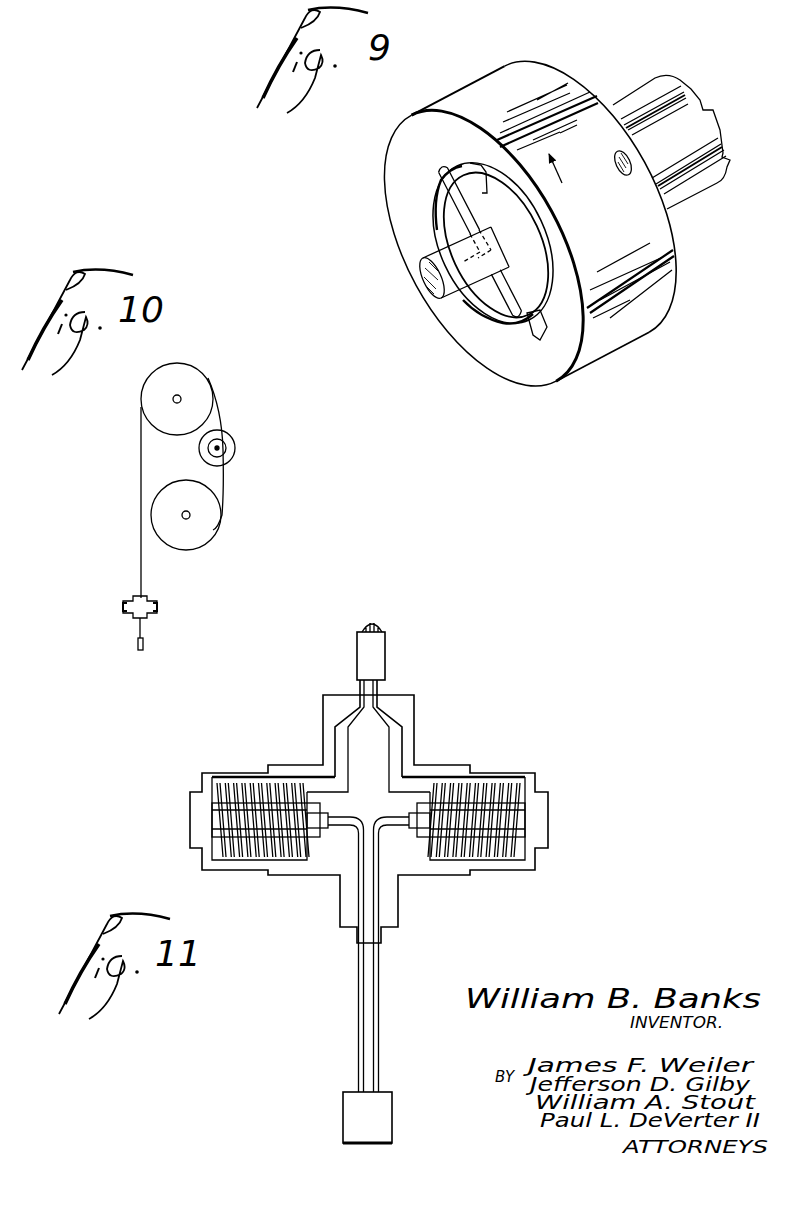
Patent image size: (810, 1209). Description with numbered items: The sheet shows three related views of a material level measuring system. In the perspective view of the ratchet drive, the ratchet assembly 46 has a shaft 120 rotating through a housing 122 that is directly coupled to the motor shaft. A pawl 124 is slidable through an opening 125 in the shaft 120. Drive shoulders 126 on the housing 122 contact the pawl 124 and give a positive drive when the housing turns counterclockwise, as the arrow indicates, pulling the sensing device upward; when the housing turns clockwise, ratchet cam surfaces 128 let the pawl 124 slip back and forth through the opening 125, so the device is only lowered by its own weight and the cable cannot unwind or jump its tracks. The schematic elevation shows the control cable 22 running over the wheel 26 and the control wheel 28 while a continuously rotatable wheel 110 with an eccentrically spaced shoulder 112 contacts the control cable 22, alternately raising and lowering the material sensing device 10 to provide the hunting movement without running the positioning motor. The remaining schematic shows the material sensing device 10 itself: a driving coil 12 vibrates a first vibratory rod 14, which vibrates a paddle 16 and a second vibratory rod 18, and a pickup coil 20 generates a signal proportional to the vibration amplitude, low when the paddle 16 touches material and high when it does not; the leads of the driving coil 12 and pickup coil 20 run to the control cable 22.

In FIG. 9, the ratchet assembly 46 is at (559, 201).
In FIG. 9, the housing 122 is at (657, 295).
In FIG. 9, the ratchet cam surfaces 128 is at (427, 205).
In FIG. 9, the pawl 124 is at (493, 313).
In FIG. 9, the opening 125 is at (484, 238).
In FIG. 9, the shaft 120 is at (420, 278).
In FIG. 9, the drive shoulders 126 is at (488, 183).
In FIG. 10, the wheel 26 is at (193, 383).
In FIG. 10, the control wheel 28 is at (212, 523).
In FIG. 10, the continuously rotatable wheel 110 is at (232, 442).
In FIG. 10, the eccentrically spaced shoulder 112 is at (208, 447).
In FIG. 10, the control cable 22 is at (219, 415).
In FIG. 11, the control cable 22 is at (385, 637).
In FIG. 10, the material sensing device 10 is at (150, 600).
In FIG. 11, the material sensing device 10 is at (435, 760).
In FIG. 11, the driving coil 12 is at (250, 773).
In FIG. 11, the pickup coil 20 is at (503, 790).
In FIG. 11, the first vibratory rod 14 is at (360, 898).
In FIG. 11, the second vibratory rod 18 is at (378, 963).
In FIG. 11, the paddle 16 is at (360, 1110).